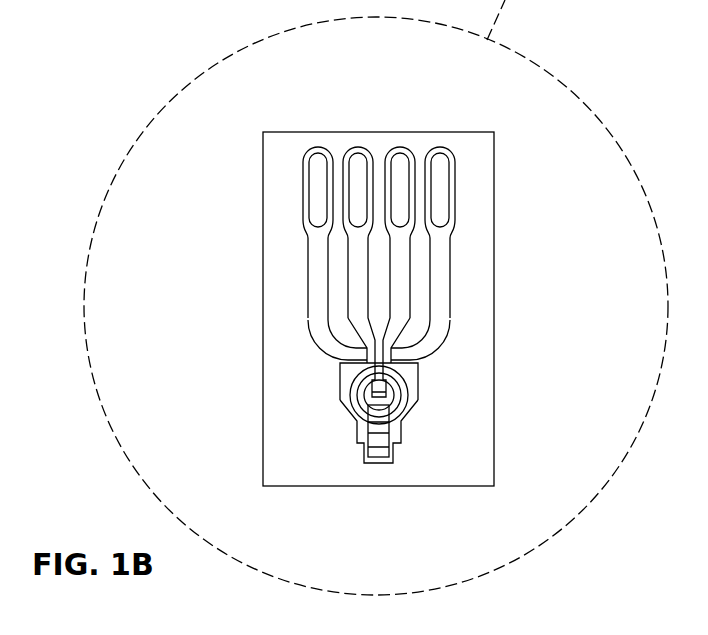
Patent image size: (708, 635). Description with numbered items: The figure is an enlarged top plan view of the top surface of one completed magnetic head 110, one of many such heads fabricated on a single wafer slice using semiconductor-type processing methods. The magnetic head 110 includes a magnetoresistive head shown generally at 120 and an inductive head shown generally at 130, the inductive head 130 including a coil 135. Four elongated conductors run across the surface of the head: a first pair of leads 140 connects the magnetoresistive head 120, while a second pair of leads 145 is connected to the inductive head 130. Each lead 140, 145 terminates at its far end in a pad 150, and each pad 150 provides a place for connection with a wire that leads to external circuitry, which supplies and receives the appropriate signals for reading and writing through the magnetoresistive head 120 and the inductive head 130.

The magnetic head 110 is at (494, 450).
The magnetoresistive head 120 is at (406, 453).
The inductive head 130 is at (342, 415).
The coil 135 is at (403, 379).
The first pair of leads 140 is at (312, 253).
The second pair of leads 145 is at (353, 285).
The pad 150 is at (358, 142).